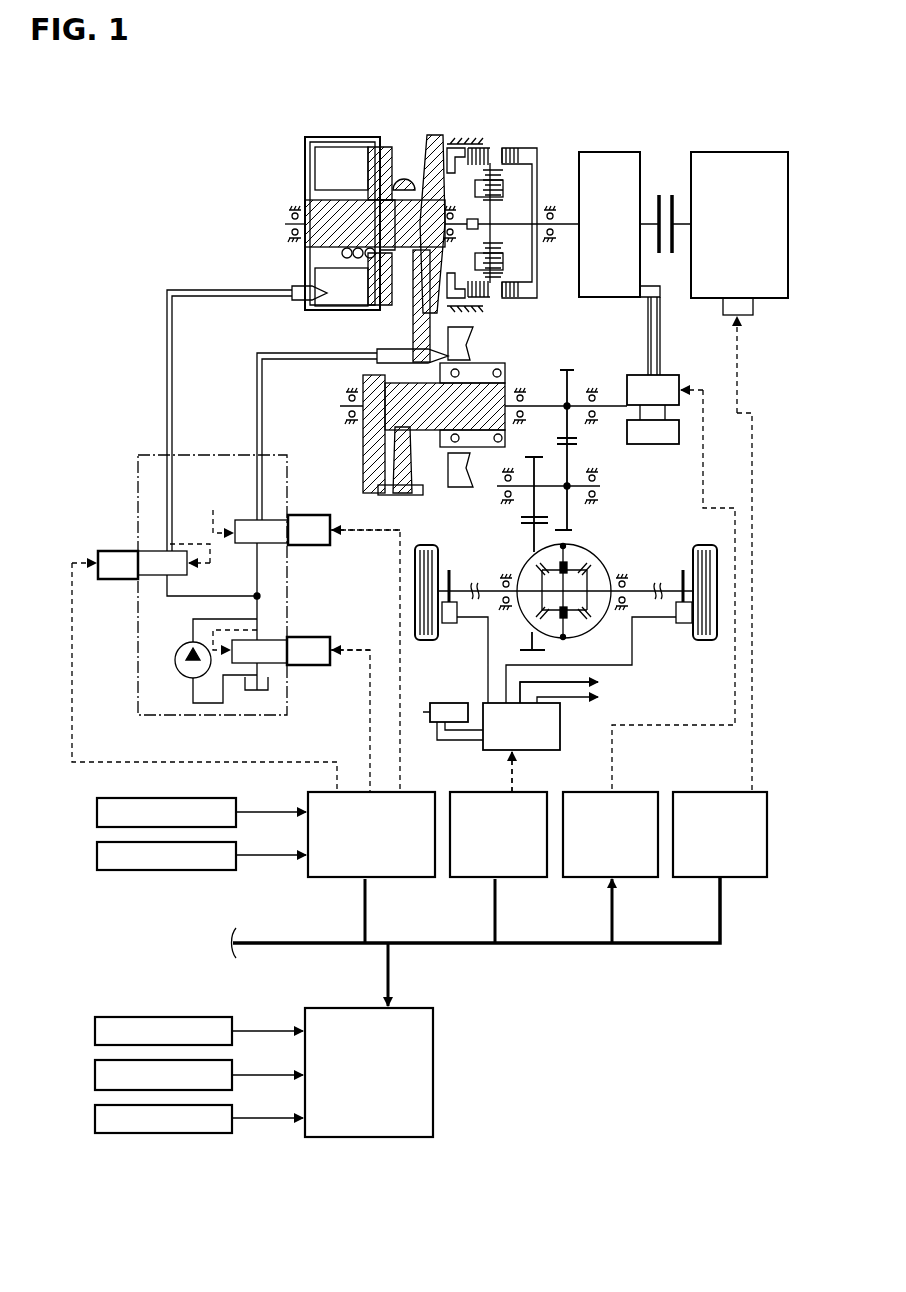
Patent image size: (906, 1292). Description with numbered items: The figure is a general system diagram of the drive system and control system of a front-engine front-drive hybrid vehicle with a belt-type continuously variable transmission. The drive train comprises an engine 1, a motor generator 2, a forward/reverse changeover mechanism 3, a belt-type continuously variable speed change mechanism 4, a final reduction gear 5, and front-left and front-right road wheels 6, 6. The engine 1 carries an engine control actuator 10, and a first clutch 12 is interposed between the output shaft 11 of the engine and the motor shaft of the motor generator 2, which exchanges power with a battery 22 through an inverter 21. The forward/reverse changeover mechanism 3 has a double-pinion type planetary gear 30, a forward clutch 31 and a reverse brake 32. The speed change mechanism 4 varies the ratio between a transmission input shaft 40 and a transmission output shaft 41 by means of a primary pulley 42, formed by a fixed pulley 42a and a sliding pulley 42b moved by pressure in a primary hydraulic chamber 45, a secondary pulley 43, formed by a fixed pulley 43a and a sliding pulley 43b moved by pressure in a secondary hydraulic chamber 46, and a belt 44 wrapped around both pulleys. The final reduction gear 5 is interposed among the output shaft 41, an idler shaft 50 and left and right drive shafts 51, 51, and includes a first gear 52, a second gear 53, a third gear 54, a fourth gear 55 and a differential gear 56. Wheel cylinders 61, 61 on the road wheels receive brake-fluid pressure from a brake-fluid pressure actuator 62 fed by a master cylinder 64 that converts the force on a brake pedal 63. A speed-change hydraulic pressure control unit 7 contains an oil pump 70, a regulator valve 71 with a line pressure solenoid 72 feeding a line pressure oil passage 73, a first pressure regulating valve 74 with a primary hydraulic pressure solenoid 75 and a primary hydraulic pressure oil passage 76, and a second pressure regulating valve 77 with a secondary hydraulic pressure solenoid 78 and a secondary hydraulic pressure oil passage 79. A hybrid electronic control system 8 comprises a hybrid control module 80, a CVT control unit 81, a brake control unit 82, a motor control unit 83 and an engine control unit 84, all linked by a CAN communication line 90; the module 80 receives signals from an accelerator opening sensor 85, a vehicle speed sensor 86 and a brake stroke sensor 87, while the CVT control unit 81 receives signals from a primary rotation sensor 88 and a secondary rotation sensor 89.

The engine 1 is at (735, 150).
The motor generator 2 is at (607, 150).
The forward/reverse changeover mechanism 3 is at (499, 197).
The belt-type continuously variable speed change mechanism 4 is at (344, 178).
The final reduction gear 5 is at (570, 445).
The front-left and front-right road wheels 6 is at (432, 647).
The speed-change hydraulic pressure control unit 7 is at (249, 500).
The hybrid electronic control system 8 is at (397, 964).
The engine control actuator 10 is at (753, 308).
The output shaft 11 is at (680, 230).
The first clutch 12 is at (665, 194).
The inverter 21 is at (680, 378).
The battery 22 is at (675, 446).
The double-pinion type planetary gear 30 is at (493, 283).
The forward clutch 31 is at (512, 148).
The reverse brake 32 is at (470, 145).
The transmission input shaft 40 is at (312, 206).
The transmission output shaft 41 is at (545, 399).
The primary pulley 42 is at (302, 152).
The fixed pulley 42a is at (424, 162).
The sliding pulley 42b is at (388, 145).
The secondary pulley 43 is at (460, 431).
The fixed pulley 43a is at (380, 453).
The sliding pulley 43b is at (417, 497).
The belt 44 is at (404, 330).
The primary hydraulic chamber 45 is at (340, 150).
The secondary hydraulic chamber 46 is at (437, 475).
The idler shaft 50 is at (577, 489).
The drive shafts 51 is at (450, 576).
The first gear 52 is at (575, 381).
The second gear 53 is at (575, 445).
The third gear 54 is at (527, 467).
The fourth gear 55 is at (533, 547).
The differential gear 56 is at (600, 556).
The wheel cylinders 61 is at (457, 624).
The brake-fluid pressure actuator 62 is at (560, 730).
The brake pedal 63 is at (410, 733).
The master cylinder 64 is at (438, 724).
The oil pump 70 is at (180, 675).
The regulator valve 71 is at (265, 640).
The line pressure solenoid 72 is at (305, 666).
The line pressure oil passage 73 is at (175, 598).
The first pressure regulating valve 74 is at (148, 551).
The primary hydraulic pressure solenoid 75 is at (118, 580).
The primary hydraulic pressure oil passage 76 is at (166, 500).
The second pressure regulating valve 77 is at (268, 520).
The secondary hydraulic pressure solenoid 78 is at (295, 546).
The secondary hydraulic pressure oil passage 79 is at (258, 470).
The hybrid control module 80 is at (433, 1070).
The CVT control unit 81 is at (408, 880).
The brake control unit 82 is at (533, 880).
The motor control unit 83 is at (643, 880).
The engine control unit 84 is at (745, 880).
The accelerator opening sensor 85 is at (94, 1031).
The vehicle speed sensor 86 is at (94, 1075).
The brake stroke sensor 87 is at (94, 1118).
The primary rotation sensor 88 is at (96, 812).
The secondary rotation sensor 89 is at (96, 855).
The CAN communication line 90 is at (590, 945).